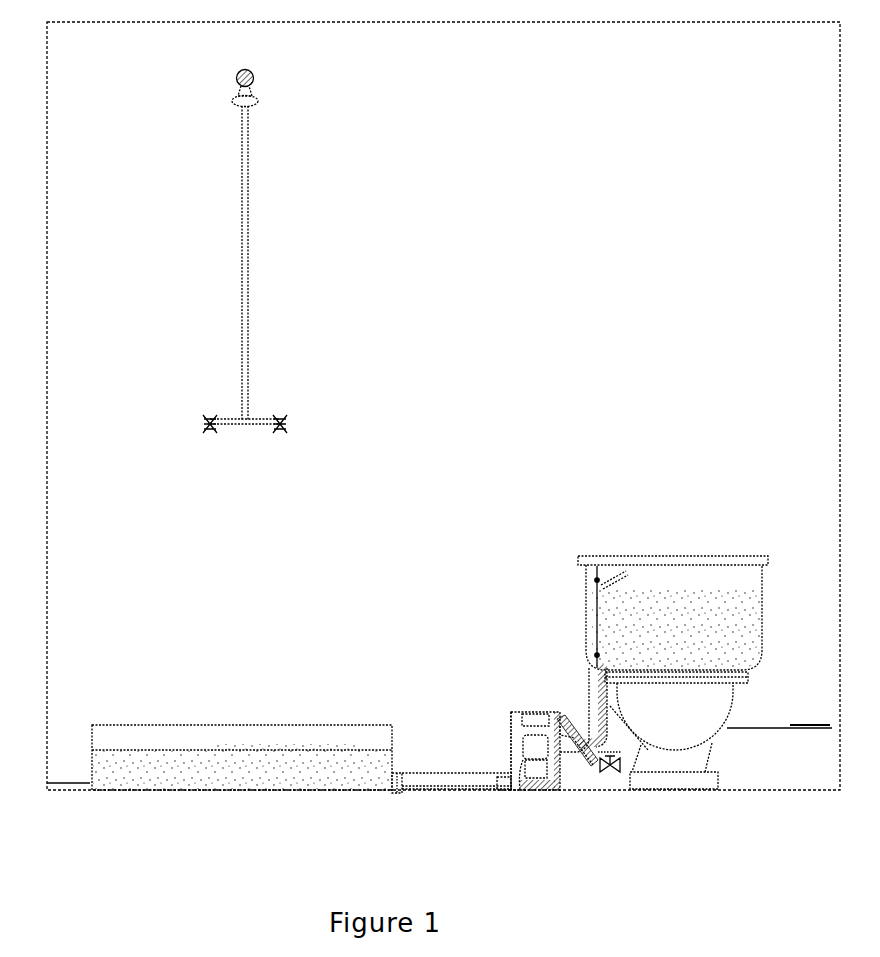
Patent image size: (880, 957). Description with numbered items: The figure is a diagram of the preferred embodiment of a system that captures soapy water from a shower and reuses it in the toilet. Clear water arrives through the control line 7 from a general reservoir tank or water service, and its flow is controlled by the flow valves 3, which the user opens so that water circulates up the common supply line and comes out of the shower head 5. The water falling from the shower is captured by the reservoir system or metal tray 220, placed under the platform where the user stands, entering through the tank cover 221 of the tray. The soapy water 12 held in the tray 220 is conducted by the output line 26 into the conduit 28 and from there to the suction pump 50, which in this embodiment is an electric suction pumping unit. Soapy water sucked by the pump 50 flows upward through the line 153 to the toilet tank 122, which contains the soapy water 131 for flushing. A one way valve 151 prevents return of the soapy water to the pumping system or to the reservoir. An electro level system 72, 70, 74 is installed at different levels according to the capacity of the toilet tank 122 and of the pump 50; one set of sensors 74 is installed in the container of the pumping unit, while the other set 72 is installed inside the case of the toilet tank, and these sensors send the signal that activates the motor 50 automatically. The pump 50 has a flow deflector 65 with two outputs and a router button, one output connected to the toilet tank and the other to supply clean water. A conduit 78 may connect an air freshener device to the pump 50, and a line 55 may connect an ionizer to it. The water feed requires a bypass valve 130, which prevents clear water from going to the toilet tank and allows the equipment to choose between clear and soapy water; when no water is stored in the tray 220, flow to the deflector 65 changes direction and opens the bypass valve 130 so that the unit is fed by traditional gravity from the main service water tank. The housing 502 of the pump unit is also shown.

The flow valves 3 is at (208, 438).
The shower head 5 is at (232, 108).
The control line 7 is at (250, 233).
The soapy water 12 is at (253, 775).
The output line 26 is at (397, 792).
The conduit 28 is at (438, 778).
The suction pump 50 is at (540, 790).
The line 55 is at (505, 790).
The flow deflector 65 is at (572, 736).
The electro level system 70 is at (526, 721).
The set of sensors 72 is at (594, 618).
The set of sensors 74 is at (558, 786).
The conduit 78 is at (745, 721).
The toilet tank 122 is at (700, 574).
The bypass valve 130 is at (620, 766).
The soapy water 131 is at (722, 645).
The one way valve 151 is at (587, 763).
The line 153 is at (608, 712).
The metal tray 220 is at (82, 787).
The tank cover 221 is at (100, 732).
The housing 502 is at (512, 725).